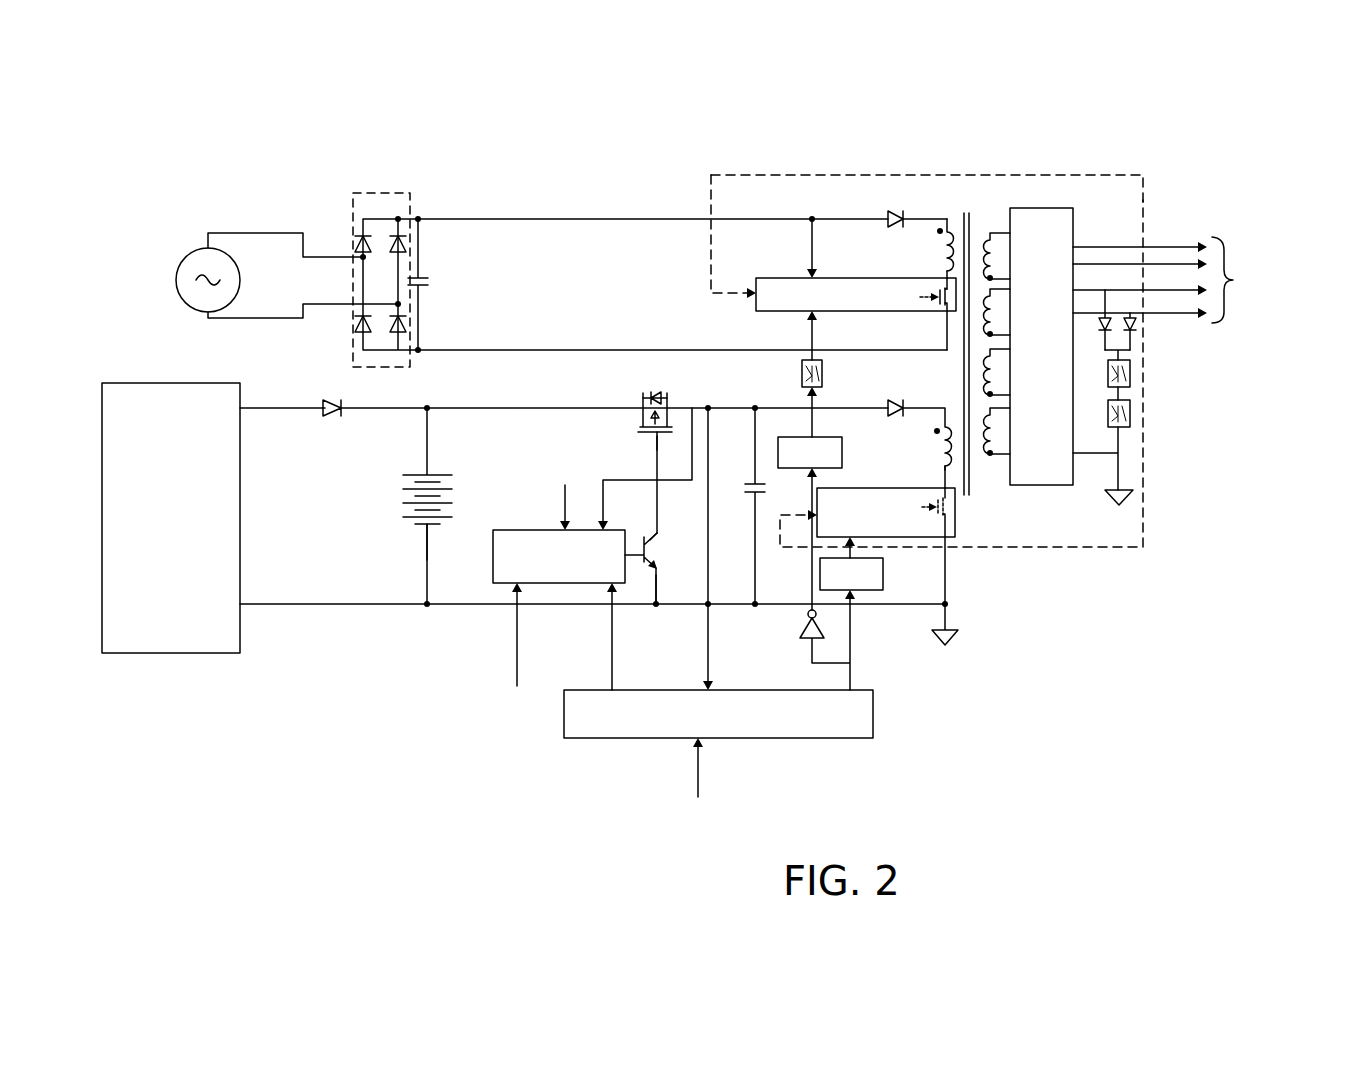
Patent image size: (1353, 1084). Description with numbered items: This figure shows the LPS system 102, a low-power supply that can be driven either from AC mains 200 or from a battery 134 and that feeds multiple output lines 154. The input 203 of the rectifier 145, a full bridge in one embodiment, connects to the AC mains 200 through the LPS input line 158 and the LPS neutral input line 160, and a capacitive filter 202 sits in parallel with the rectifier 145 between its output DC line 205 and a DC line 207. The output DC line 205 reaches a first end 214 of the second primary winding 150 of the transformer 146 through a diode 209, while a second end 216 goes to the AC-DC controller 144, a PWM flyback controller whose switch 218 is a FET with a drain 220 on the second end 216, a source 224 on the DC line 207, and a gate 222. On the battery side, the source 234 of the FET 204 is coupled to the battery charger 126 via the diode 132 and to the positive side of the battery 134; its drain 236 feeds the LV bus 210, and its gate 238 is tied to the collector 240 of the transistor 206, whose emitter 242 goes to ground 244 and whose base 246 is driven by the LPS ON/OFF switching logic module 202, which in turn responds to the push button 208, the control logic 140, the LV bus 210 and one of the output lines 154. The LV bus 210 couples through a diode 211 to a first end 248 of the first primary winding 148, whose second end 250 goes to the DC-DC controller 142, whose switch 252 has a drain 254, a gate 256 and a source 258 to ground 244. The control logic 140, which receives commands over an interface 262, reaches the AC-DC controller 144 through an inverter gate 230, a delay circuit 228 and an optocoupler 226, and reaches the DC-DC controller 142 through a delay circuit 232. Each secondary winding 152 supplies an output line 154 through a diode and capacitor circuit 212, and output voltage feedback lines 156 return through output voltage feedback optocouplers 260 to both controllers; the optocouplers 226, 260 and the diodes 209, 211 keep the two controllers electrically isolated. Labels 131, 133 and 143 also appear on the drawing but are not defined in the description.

The LPS system 102 is at (198, 160).
The battery charger 126 is at (177, 643).
The diode 131 is at (323, 403).
The diode 132 is at (335, 413).
The diode cathode 133 is at (343, 408).
The battery 134 is at (445, 488).
The control logic 140 is at (835, 723).
The DC-DC controller 142 is at (832, 488).
The battery negative terminal 143 is at (430, 523).
The AC-DC controller 144 is at (766, 312).
The rectifier 145 is at (385, 200).
The transformer 146 is at (966, 218).
The first primary winding 148 is at (940, 438).
The second primary winding 150 is at (938, 226).
The secondary windings 152 is at (993, 320).
The output lines 154 is at (562, 498).
The output voltage feedback lines 156 is at (1145, 201).
The LPS input line 158 is at (237, 233).
The LPS neutral input line 160 is at (272, 318).
The AC mains 200 is at (205, 255).
The capacitive filter 202 is at (418, 278).
The input of the rectifier 203 is at (353, 285).
The field effect transistor 204 is at (638, 428).
The output DC line 205 is at (418, 219).
The transistor 206 is at (648, 555).
The DC line 207 is at (418, 350).
The push button 208 is at (497, 715).
The diode 209 is at (890, 215).
The low voltage bus 210 is at (753, 412).
The diode 211 is at (893, 404).
The diode and capacitor circuit 212 is at (1037, 478).
The first end of the second primary winding 214 is at (946, 228).
The second end of the second primary winding 216 is at (946, 266).
The switch 218 is at (938, 297).
The drain 220 is at (945, 288).
The gate 222 is at (933, 302).
The source 224 is at (943, 308).
The optocoupler 226 is at (802, 370).
The delay circuit 228 is at (840, 432).
The inverter gate 230 is at (808, 638).
The delay circuit 232 is at (883, 575).
The source of the FET 234 is at (640, 405).
The drain of the FET 236 is at (685, 390).
The gate of the FET 238 is at (657, 436).
The collector 240 is at (656, 510).
The emitter 242 is at (650, 567).
The ground 244 is at (942, 646).
The base 246 is at (643, 547).
The first end of the first primary winding 248 is at (946, 420).
The second end of the first primary winding 250 is at (945, 455).
The switch 252 is at (943, 508).
The drain 254 is at (943, 497).
The gate 256 is at (932, 530).
The source 258 is at (947, 520).
The output voltage feedback optocoupler 260 is at (1130, 370).
The interface 262 is at (702, 827).